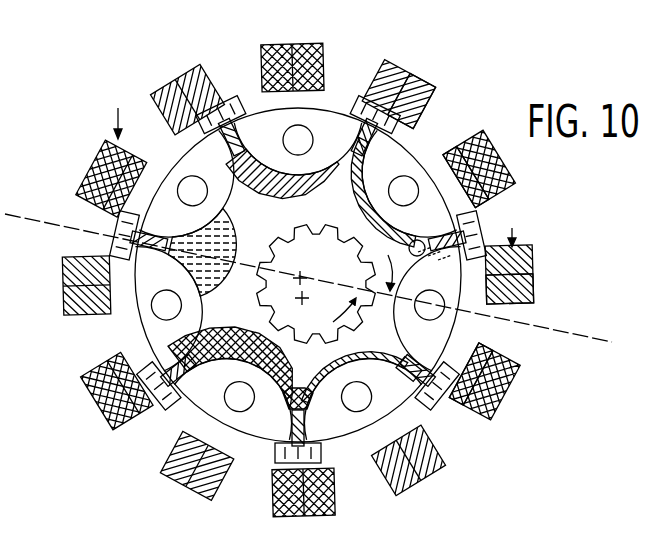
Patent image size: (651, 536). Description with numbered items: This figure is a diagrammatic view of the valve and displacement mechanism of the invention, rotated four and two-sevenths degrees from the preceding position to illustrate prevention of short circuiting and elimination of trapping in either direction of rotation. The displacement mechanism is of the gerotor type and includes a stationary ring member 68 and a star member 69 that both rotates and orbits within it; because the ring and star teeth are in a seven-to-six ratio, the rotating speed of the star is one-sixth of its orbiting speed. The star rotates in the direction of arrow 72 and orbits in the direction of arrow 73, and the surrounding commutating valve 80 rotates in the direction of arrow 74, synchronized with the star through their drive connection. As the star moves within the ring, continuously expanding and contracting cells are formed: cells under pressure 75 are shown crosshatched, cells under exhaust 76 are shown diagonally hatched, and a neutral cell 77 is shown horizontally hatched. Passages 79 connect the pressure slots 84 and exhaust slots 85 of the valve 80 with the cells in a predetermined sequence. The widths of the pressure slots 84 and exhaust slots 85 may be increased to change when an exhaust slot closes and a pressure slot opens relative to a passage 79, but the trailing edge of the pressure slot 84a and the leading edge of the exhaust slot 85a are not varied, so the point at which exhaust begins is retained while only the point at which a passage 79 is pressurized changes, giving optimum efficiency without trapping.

The stationary ring member 68 is at (330, 121).
The star member 69 is at (287, 371).
The arrow 72 is at (398, 279).
The arrow 73 is at (348, 325).
The arrow 74 is at (512, 228).
The cells under pressure 75 is at (205, 346).
The cells under exhaust 76 is at (252, 156).
The neutral cell 77 is at (200, 241).
The passages 79 is at (228, 129).
The valve 80 is at (112, 110).
The pressure slots 84 is at (303, 40).
The trailing edge of the pressure slot 84a is at (495, 372).
The exhaust slots 85 is at (210, 64).
The leading edge of the exhaust slot 85a is at (430, 102).